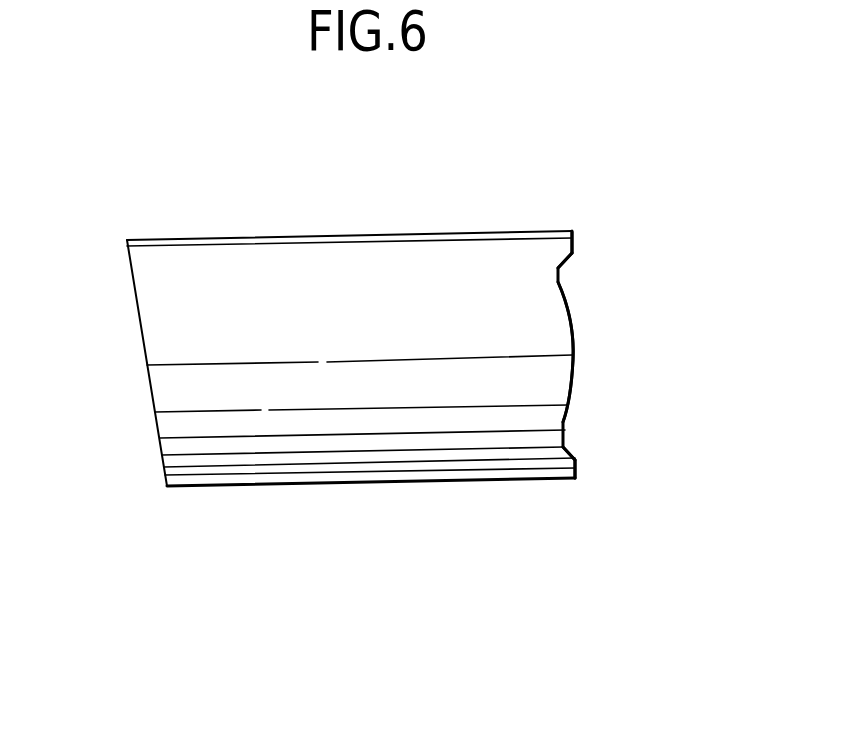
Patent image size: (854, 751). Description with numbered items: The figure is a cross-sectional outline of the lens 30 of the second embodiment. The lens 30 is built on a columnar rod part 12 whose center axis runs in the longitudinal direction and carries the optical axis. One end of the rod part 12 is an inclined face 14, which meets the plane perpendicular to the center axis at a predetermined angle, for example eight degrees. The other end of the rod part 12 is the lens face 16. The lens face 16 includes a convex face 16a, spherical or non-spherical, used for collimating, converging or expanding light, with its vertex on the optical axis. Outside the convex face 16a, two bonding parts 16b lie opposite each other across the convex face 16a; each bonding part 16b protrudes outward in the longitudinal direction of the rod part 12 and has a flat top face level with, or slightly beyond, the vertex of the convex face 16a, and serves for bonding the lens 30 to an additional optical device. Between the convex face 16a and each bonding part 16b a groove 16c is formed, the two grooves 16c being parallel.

The rod part 12 is at (250, 258).
The inclined face 14 is at (150, 377).
The lens face 16 is at (660, 330).
The convex face 16a is at (573, 360).
The bonding part 16b is at (572, 245).
The groove 16c is at (560, 277).
The lens 30 is at (393, 190).